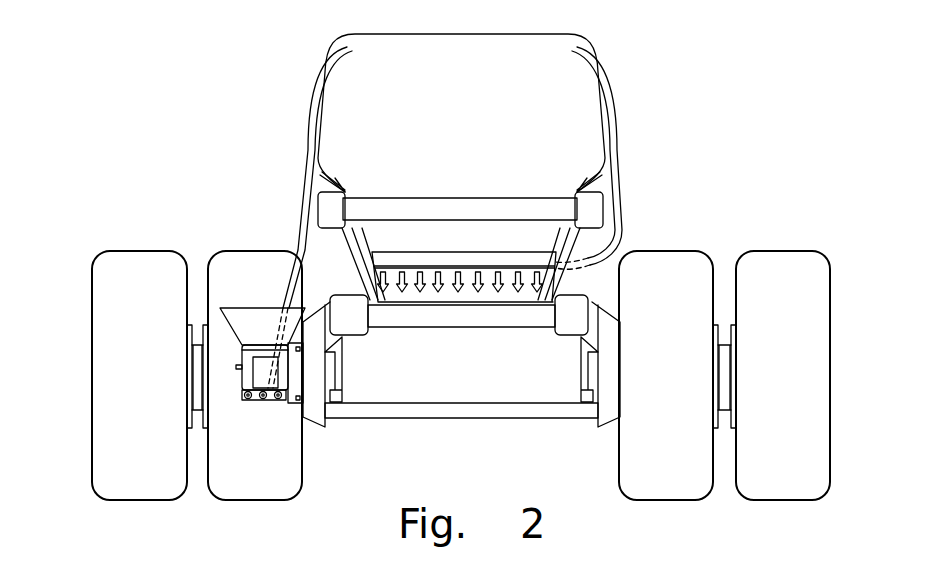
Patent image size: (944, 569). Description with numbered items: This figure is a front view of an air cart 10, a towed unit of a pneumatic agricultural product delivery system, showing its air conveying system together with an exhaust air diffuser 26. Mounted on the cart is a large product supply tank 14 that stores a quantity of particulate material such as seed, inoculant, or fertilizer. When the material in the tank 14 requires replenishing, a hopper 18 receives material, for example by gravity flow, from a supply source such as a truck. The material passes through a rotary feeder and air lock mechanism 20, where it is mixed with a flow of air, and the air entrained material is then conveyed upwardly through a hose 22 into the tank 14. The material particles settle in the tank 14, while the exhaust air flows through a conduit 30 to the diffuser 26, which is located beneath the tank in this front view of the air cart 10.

The air cart 10 is at (461, 267).
The product supply tank 14 is at (476, 138).
The hopper 18 is at (247, 312).
The rotary feeder and air lock mechanism 20 is at (282, 380).
The hose 22 is at (310, 88).
The exhaust air diffuser 26 is at (390, 263).
The conduit 30 is at (628, 112).